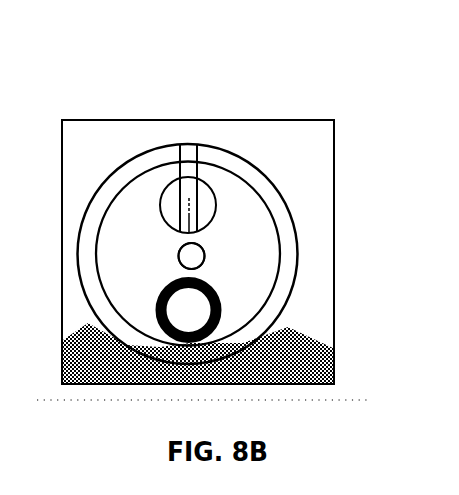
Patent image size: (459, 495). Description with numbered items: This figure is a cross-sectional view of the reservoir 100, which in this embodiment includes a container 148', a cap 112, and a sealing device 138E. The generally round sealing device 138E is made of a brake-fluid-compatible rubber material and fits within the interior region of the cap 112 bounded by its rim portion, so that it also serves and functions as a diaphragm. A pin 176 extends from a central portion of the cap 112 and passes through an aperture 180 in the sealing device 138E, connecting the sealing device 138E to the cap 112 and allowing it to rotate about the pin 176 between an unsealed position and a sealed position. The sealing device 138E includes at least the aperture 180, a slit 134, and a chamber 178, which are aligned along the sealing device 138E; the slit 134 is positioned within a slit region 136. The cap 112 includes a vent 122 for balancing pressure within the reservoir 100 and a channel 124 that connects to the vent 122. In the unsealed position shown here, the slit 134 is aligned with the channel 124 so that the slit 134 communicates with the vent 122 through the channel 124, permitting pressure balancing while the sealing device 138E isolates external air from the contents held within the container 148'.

The reservoir 100 is at (96, 84).
The container 148' is at (206, 234).
The cap 112 is at (262, 170).
The sealing device 138E is at (281, 243).
The slit region 136 is at (168, 187).
The vent 122 is at (191, 148).
The slit 134 is at (185, 210).
The channel 124 is at (193, 222).
The pin 176 is at (179, 256).
The aperture 180 is at (203, 250).
The chamber 178 is at (193, 303).